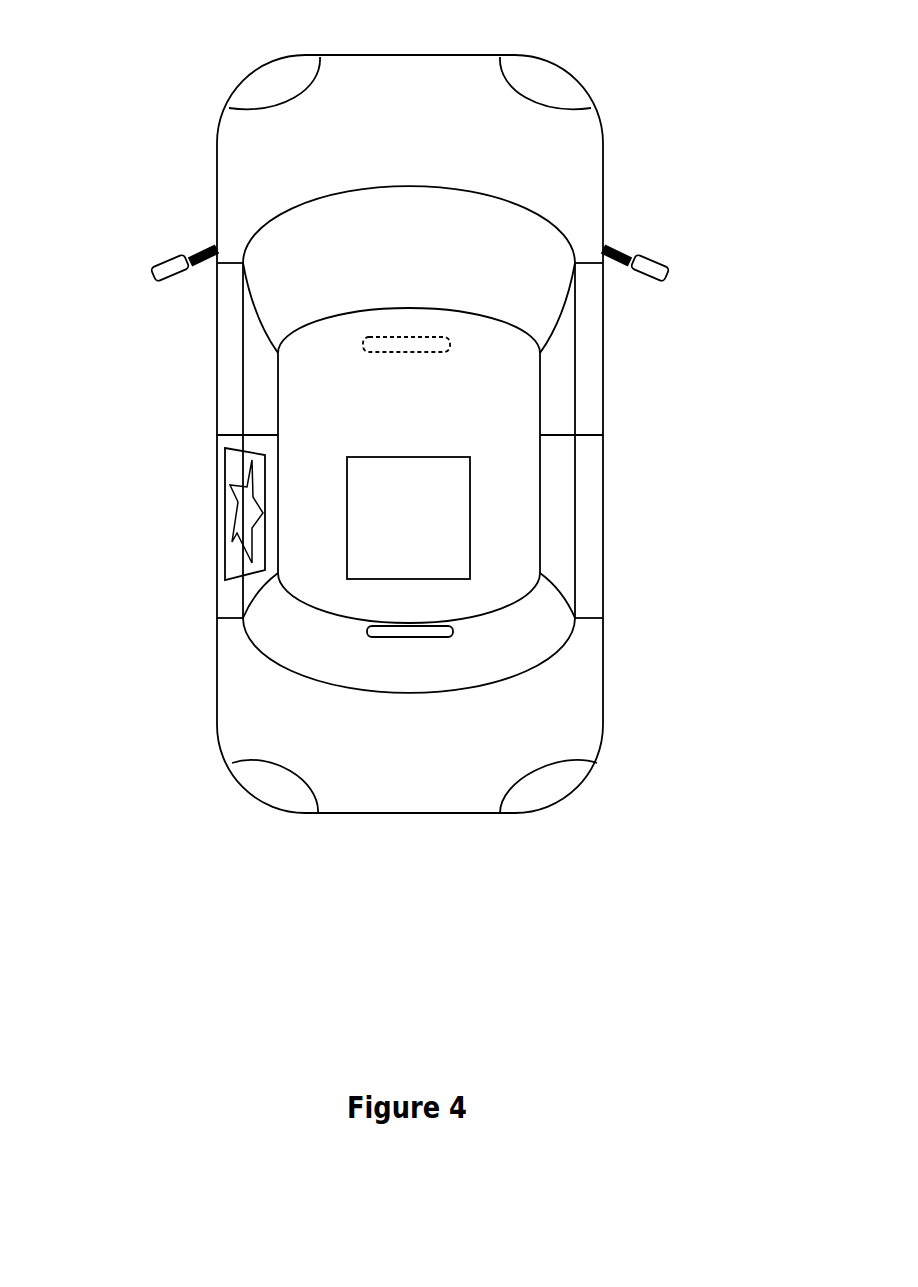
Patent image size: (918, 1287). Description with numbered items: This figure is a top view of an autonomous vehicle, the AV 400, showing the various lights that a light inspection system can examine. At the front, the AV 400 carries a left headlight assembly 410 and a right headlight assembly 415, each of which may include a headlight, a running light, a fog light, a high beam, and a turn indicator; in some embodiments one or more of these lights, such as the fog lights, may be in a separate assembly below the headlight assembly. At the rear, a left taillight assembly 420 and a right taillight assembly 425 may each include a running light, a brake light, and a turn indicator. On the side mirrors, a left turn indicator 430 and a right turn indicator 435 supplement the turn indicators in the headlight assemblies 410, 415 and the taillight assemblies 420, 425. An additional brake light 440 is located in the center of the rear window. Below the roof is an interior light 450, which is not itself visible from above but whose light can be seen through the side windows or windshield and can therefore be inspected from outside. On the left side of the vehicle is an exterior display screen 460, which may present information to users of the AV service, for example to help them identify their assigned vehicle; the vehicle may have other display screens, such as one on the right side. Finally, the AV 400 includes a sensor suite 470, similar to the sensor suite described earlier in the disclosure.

The AV 400 is at (428, 108).
The left headlight assembly 410 is at (248, 83).
The right headlight assembly 415 is at (562, 83).
The left taillight assembly 420 is at (255, 788).
The right taillight assembly 425 is at (570, 790).
The left turn indicator 430 is at (163, 262).
The right turn indicator 435 is at (650, 262).
The additional brake light 440 is at (425, 638).
The interior light 450 is at (448, 340).
The exterior display screen 460 is at (233, 473).
The sensor suite 470 is at (427, 562).